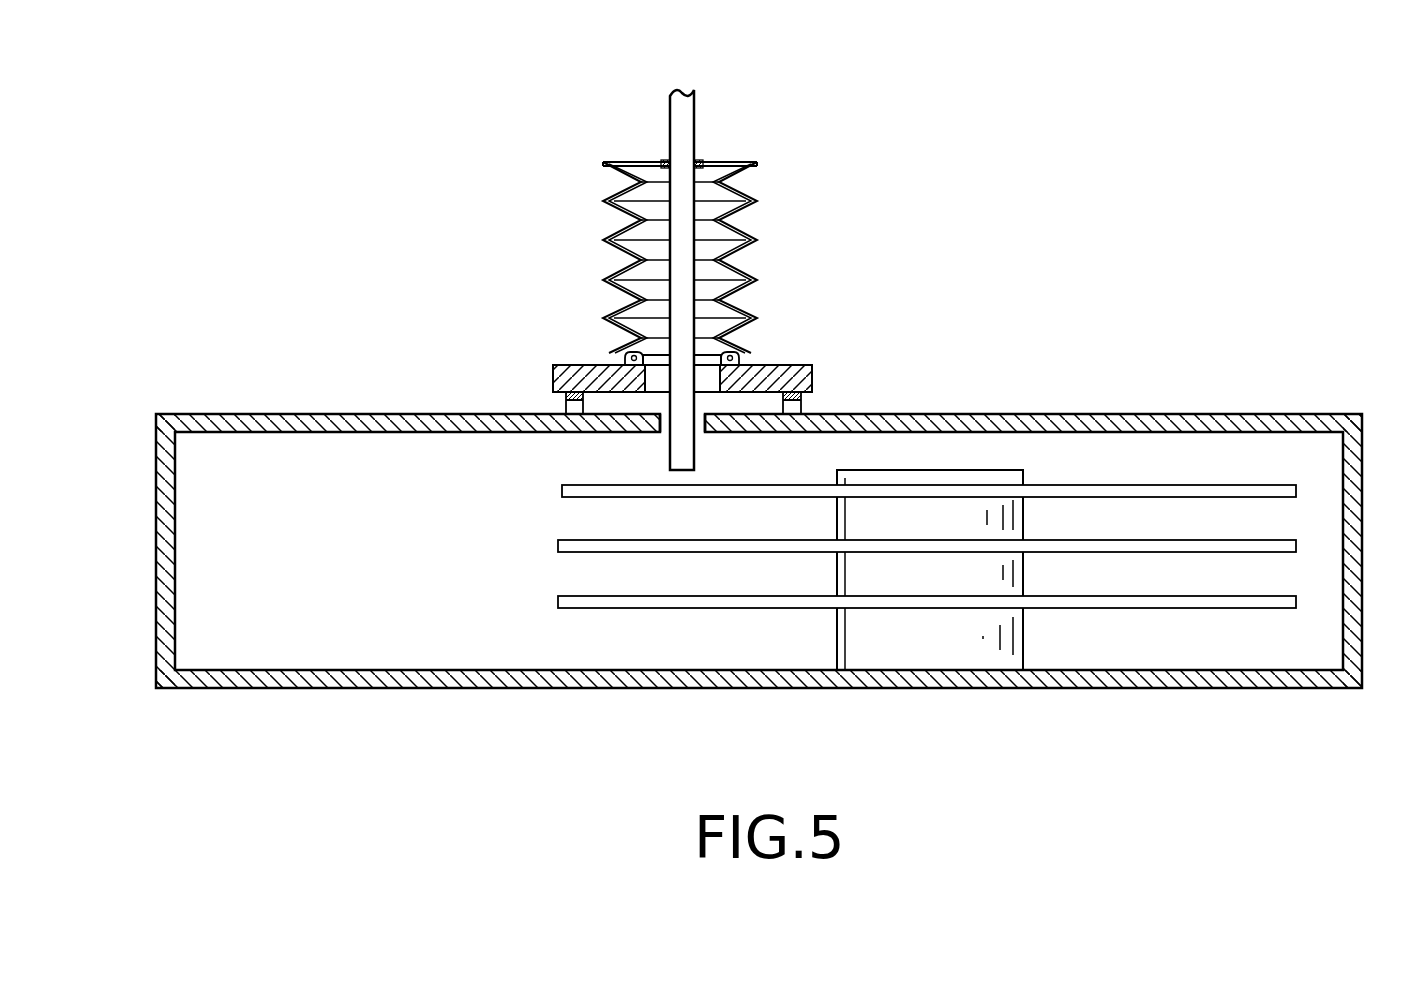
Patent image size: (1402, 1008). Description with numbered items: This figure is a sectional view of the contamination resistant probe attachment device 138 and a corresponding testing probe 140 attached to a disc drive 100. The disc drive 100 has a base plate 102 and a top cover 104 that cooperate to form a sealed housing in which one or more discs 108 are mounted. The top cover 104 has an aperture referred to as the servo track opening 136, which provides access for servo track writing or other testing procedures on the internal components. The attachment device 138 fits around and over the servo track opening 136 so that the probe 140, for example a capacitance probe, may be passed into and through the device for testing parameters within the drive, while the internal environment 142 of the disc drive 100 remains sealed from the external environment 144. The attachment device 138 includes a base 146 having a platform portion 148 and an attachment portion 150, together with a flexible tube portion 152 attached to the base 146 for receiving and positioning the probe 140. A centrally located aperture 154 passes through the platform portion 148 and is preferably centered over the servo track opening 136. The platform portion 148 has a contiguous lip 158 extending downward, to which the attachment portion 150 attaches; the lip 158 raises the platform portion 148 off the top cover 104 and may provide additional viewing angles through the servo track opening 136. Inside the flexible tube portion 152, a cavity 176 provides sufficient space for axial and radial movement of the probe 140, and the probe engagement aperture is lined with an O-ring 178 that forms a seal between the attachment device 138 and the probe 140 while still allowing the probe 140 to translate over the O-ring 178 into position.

The disc drive 100 is at (1175, 420).
The base plate 102 is at (552, 690).
The top cover 104 is at (325, 414).
The discs 108 is at (1250, 486).
The servo track opening 136 is at (700, 430).
The contamination resistant probe attachment device 138 is at (838, 243).
The testing probe 140 is at (683, 128).
The internal environment 142 is at (185, 527).
The external environment 144 is at (396, 748).
The base 146 is at (484, 354).
The platform portion 148 is at (800, 380).
The attachment portion 150 is at (803, 406).
The flexible tube portion 152 is at (760, 318).
The aperture 154 is at (650, 372).
The lip 158 is at (563, 403).
The cavity 176 is at (715, 208).
The O-ring 178 is at (657, 162).